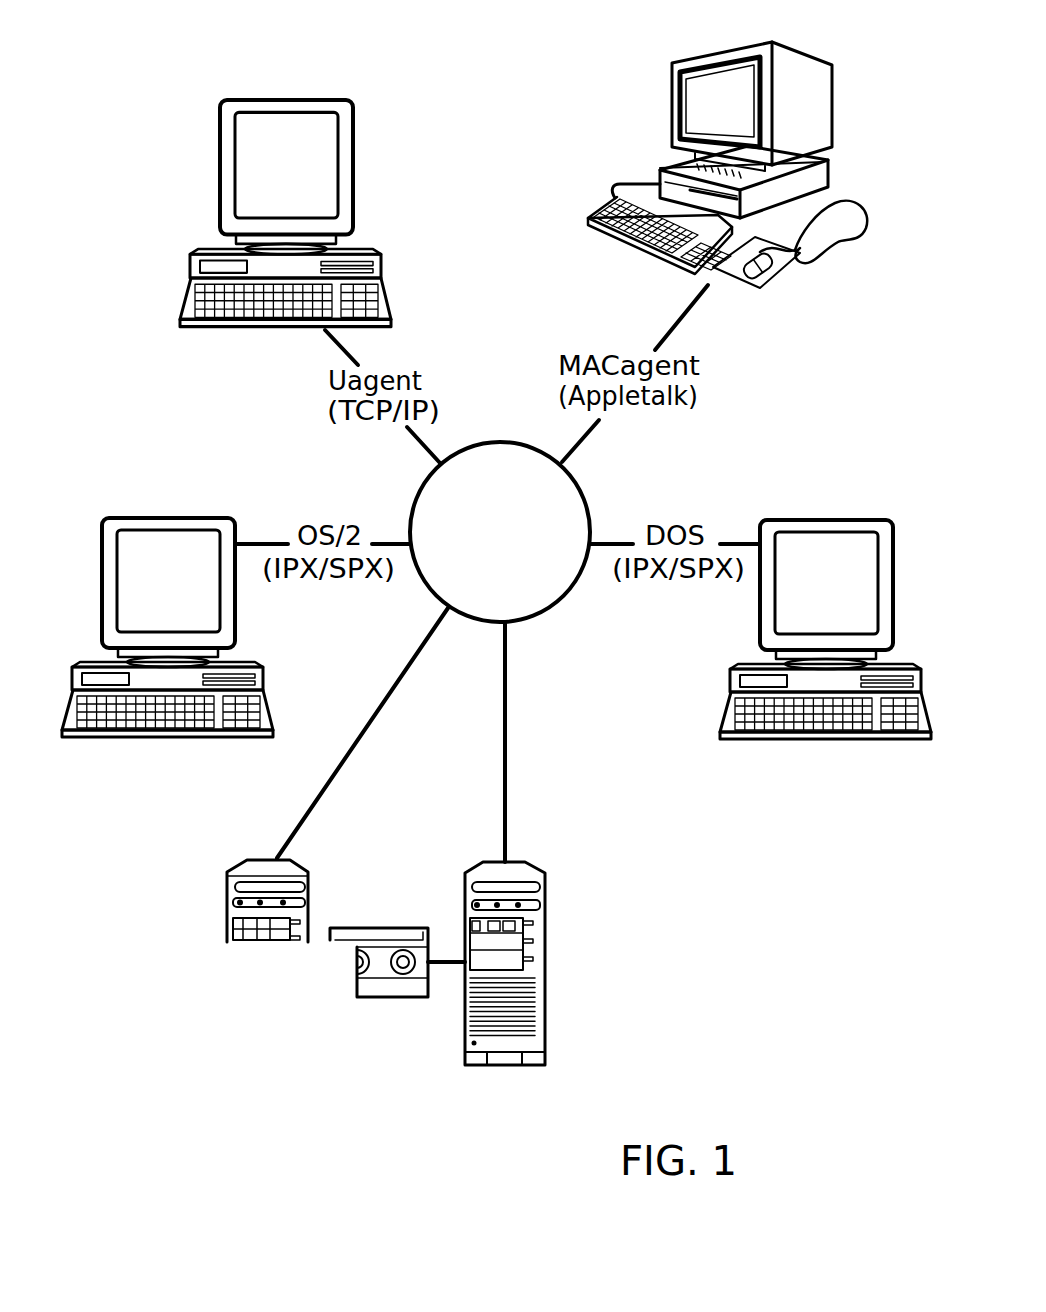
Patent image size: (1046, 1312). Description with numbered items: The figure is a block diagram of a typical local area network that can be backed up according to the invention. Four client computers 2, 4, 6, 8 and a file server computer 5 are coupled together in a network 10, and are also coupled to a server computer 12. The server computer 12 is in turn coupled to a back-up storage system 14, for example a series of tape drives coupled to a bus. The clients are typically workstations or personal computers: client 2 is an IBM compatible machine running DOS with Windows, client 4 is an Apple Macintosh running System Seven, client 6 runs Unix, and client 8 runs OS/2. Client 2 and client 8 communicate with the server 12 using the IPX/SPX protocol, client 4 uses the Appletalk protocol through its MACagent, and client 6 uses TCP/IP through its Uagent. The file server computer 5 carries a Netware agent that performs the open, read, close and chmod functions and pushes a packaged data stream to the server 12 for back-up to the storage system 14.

The client computer 2 is at (825, 520).
The client computer 4 is at (678, 102).
The file server computer 5 is at (228, 902).
The client computer 6 is at (352, 140).
The client computer 8 is at (180, 518).
The network 10 is at (587, 503).
The server computer 12 is at (547, 920).
The back-up storage system 14 is at (370, 927).